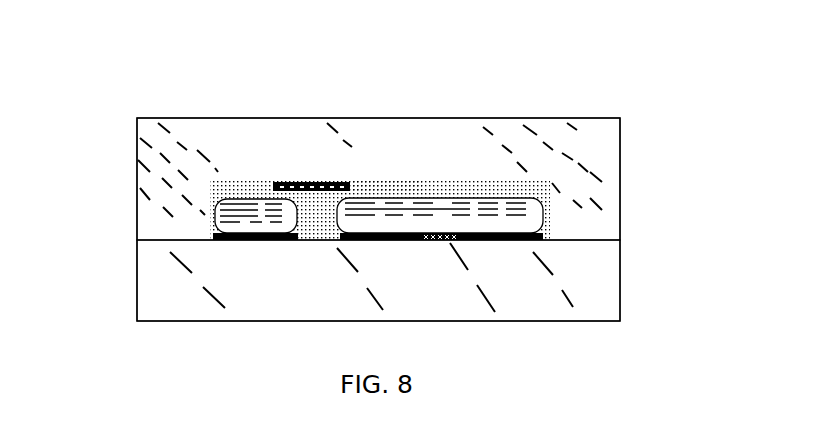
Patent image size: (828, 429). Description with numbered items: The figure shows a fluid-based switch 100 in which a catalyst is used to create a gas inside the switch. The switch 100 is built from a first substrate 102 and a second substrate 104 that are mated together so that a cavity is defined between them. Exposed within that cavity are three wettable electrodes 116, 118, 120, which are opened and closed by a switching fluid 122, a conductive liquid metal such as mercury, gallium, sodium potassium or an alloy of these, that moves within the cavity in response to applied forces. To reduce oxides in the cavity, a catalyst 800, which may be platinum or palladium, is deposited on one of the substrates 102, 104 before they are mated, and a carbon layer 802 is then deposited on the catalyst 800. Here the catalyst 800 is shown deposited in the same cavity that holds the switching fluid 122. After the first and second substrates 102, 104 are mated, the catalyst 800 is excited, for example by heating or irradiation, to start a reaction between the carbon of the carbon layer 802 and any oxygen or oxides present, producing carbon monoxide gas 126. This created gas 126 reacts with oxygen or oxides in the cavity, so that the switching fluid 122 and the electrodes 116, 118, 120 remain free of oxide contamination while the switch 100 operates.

The switch 100 is at (118, 230).
The first substrate 102 is at (604, 149).
The second substrate 104 is at (608, 268).
The electrode 116 is at (262, 240).
The electrode 118 is at (397, 243).
The electrode 120 is at (508, 243).
The switching fluid 122 is at (258, 205).
The gas 126 is at (440, 234).
The catalyst 800 is at (278, 180).
The carbon layer 802 is at (383, 174).